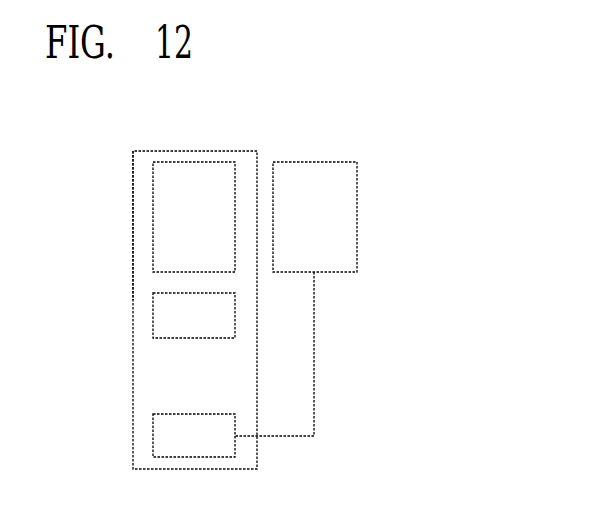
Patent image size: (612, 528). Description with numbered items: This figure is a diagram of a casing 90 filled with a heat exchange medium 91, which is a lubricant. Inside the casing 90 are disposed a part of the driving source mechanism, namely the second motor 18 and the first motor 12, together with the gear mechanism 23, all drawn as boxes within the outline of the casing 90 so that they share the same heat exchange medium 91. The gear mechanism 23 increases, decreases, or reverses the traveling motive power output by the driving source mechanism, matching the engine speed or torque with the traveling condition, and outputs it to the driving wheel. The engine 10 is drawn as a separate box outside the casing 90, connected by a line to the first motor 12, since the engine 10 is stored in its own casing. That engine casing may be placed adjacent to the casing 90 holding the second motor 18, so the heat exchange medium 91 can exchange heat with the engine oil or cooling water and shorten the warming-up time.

The engine 10 is at (308, 162).
The first motor 12 is at (187, 457).
The second motor 18 is at (188, 162).
The gear mechanism 23 is at (223, 338).
The casing 90 is at (132, 367).
The heat exchange medium 91 is at (141, 250).